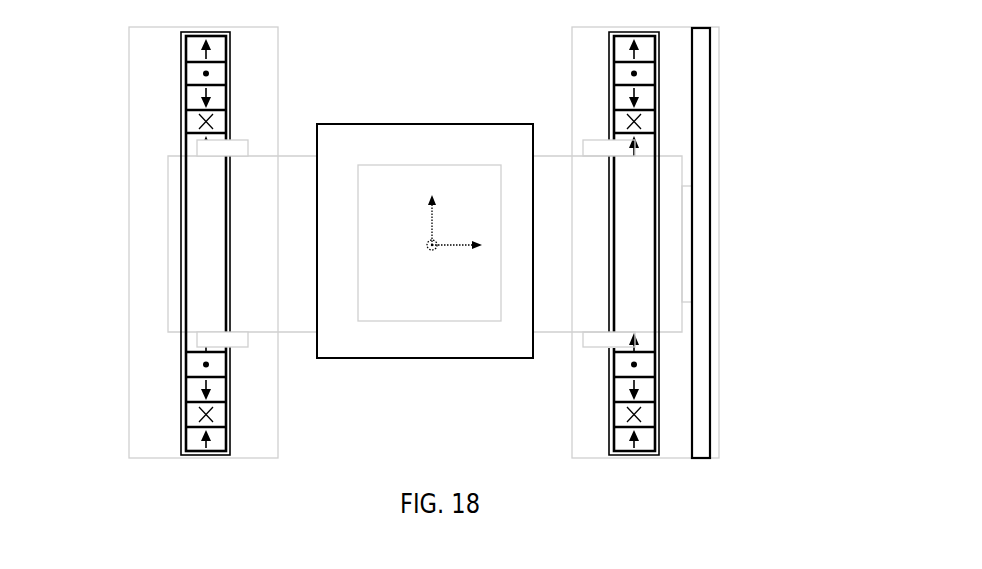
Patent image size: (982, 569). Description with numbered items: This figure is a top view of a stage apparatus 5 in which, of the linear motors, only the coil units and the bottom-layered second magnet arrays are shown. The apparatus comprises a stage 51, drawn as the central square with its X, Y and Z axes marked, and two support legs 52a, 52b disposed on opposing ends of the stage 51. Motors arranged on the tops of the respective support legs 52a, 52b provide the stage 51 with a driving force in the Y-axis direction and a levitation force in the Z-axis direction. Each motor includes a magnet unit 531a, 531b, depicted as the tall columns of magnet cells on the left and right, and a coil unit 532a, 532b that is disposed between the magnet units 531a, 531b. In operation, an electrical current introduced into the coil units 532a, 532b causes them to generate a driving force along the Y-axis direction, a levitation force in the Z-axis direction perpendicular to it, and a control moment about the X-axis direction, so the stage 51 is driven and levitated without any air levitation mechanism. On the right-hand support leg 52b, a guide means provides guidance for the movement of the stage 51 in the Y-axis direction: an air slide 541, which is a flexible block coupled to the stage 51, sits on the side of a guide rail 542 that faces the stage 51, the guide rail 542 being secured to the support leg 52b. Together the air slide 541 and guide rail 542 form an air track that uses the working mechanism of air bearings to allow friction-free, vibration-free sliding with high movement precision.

The stage apparatus 5 is at (391, 100).
The stage 51 is at (450, 165).
The support leg 52a is at (258, 117).
The support leg 52b is at (593, 126).
The magnet unit 531a is at (196, 103).
The magnet unit 531b is at (645, 103).
The coil unit 532a is at (200, 150).
The coil unit 532b is at (612, 149).
The air slide 541 is at (688, 240).
The guide rail 542 is at (702, 287).